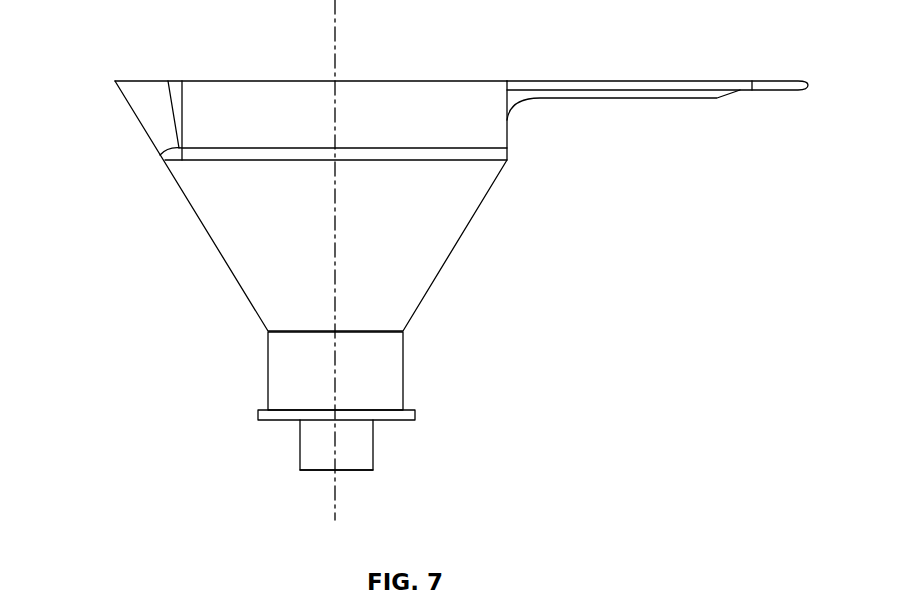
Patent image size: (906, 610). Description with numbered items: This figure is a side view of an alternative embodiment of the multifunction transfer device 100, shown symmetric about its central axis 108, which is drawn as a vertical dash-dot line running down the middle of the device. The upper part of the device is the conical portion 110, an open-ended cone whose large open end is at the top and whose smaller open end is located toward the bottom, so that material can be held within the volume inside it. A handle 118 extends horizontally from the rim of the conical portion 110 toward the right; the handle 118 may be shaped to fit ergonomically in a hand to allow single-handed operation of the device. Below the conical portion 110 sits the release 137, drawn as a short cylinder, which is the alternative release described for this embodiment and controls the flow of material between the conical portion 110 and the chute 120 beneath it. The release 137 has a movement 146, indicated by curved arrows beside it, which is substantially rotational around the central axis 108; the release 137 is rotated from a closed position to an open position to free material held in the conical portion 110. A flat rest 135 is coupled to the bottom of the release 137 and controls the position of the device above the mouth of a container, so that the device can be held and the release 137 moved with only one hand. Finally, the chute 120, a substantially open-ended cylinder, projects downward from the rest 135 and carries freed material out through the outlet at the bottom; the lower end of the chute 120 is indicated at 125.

The multifunction transfer device 100 is at (138, 36).
The central axis 108 is at (338, 52).
The conical portion 110 is at (468, 223).
The handle 118 is at (735, 80).
The release 137 is at (403, 370).
The movement 146 is at (257, 355).
The rest 135 is at (383, 421).
The chute 120 is at (300, 442).
The outlet opening 125 is at (358, 475).